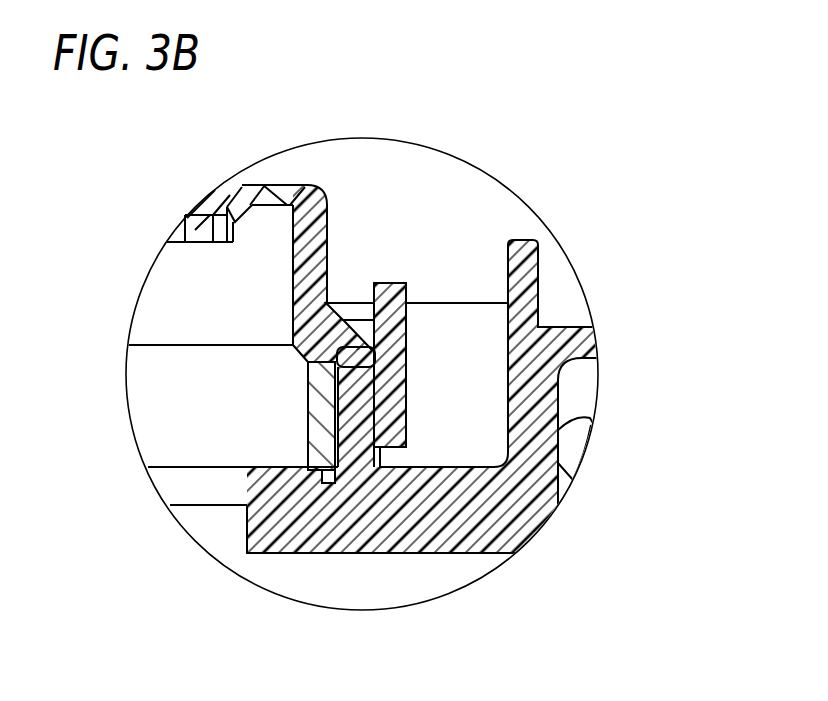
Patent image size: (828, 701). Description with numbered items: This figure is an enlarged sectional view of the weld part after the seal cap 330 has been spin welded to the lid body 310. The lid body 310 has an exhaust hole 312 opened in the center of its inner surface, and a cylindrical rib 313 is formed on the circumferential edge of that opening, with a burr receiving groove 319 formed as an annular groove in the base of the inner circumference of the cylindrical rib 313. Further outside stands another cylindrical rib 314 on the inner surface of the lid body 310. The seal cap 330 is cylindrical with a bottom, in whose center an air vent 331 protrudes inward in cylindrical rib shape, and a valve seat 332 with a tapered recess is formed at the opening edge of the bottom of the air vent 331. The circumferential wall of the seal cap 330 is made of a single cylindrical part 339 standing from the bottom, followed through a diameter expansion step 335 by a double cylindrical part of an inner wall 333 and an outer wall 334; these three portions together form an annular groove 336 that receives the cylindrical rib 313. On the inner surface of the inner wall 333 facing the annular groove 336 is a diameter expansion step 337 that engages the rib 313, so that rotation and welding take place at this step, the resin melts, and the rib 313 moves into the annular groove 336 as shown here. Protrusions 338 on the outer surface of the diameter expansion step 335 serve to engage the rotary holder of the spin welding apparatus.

The lid body 310 is at (449, 557).
The exhaust hole 312 is at (200, 530).
The cylindrical rib 313 is at (364, 445).
The cylindrical rib 314 is at (518, 500).
The burr receiving groove 319 is at (324, 484).
The seal cap 330 is at (314, 187).
The air vent 331 is at (200, 240).
The valve seat 332 is at (226, 206).
The inner wall 333 is at (317, 438).
The outer wall 334 is at (400, 399).
The diameter expansion step 335 is at (347, 356).
The annular groove 336 is at (407, 358).
The diameter expansion step 337 is at (307, 360).
The protrusions 338 is at (387, 289).
The single cylindrical part 339 is at (326, 212).